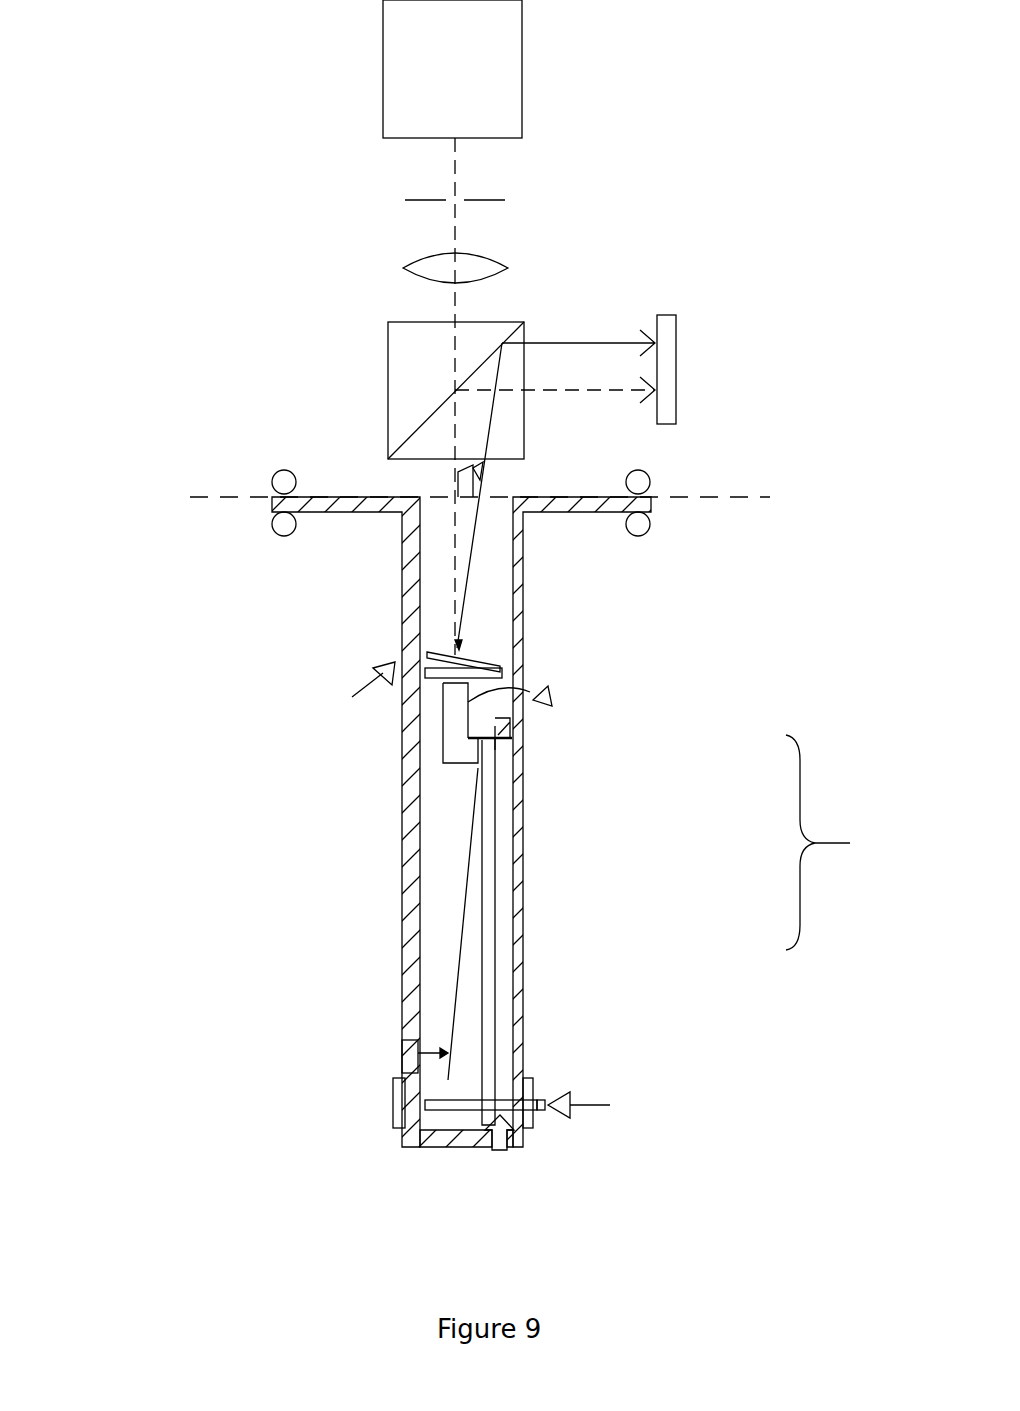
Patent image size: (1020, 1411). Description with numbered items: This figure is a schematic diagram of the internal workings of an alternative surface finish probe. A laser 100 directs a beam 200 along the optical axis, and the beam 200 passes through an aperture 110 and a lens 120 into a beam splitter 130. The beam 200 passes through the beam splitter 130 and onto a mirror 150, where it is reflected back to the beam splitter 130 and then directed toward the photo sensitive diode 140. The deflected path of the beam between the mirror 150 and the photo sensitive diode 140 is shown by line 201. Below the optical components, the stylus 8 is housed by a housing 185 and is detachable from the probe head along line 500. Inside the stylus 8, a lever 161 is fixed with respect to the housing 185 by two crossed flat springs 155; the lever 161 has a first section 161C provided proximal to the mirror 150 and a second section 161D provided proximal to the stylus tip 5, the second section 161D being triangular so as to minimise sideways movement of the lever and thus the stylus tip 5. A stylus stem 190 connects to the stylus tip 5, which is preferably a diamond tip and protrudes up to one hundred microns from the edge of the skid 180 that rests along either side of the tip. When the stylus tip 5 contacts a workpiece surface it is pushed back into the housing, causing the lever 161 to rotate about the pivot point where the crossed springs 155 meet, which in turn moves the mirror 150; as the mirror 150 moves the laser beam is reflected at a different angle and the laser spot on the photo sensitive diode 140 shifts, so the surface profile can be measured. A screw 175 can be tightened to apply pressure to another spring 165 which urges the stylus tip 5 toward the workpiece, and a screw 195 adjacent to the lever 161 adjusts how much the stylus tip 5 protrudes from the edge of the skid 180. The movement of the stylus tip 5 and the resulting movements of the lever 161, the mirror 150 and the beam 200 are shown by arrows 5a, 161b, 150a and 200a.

The laser 100 is at (412, 50).
The aperture 110 is at (395, 197).
The lens 120 is at (392, 258).
The beam splitter 130 is at (388, 370).
The photo sensitive diode 140 is at (676, 400).
The beam 200 is at (455, 172).
The beam movement arrow 200a is at (513, 503).
The deflected beam path line 201 is at (475, 517).
The detachment line 500 is at (213, 495).
The stylus 8 is at (278, 608).
The mirror 150 is at (503, 668).
The mirror movement arrow 150a is at (360, 677).
The crossed flat springs 155 is at (440, 725).
The lever 161 is at (845, 842).
The lever movement arrow 161b is at (546, 698).
The first section of lever 161C is at (450, 744).
The second section of lever 161D is at (488, 942).
The spring 165 is at (452, 865).
The screw 175 is at (402, 1058).
The skid 180 is at (533, 1082).
The housing 185 is at (405, 955).
The stylus stem 190 is at (448, 1110).
The screw 195 is at (497, 1152).
The stylus tip 5 is at (547, 1097).
The stylus tip movement arrow 5a is at (614, 1103).